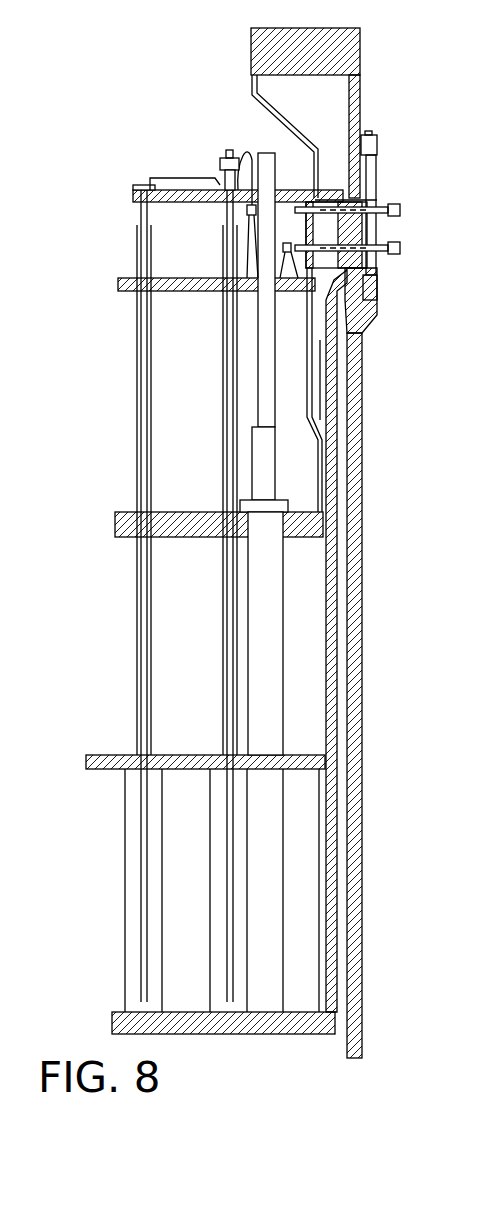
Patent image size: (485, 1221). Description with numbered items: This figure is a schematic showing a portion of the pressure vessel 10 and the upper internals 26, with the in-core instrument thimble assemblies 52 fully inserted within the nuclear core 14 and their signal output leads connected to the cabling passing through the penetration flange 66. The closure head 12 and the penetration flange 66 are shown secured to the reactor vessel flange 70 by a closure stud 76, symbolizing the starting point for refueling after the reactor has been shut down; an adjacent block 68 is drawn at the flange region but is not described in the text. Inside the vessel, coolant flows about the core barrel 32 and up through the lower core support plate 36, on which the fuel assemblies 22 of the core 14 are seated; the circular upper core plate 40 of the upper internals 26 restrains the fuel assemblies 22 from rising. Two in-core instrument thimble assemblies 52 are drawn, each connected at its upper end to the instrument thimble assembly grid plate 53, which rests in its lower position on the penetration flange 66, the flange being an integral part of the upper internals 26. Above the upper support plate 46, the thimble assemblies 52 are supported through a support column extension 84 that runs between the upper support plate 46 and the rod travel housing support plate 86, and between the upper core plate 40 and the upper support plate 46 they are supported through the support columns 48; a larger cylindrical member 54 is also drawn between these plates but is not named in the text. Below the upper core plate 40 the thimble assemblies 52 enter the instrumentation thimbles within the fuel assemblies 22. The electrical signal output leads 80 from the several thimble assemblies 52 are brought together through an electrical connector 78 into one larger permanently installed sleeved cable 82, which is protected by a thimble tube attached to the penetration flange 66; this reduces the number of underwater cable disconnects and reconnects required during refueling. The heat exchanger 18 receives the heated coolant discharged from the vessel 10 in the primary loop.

The pressure vessel 10 is at (380, 700).
The closure head 12 is at (360, 100).
The nuclear core 14 is at (106, 838).
The heat exchanger 18 is at (251, 52).
The fuel assemblies 22 is at (210, 930).
The upper internals 26 is at (198, 405).
The core barrel 32 is at (340, 468).
The lower core support plate 36 is at (112, 1025).
The upper core plate 40 is at (88, 762).
The upper support plate 46 is at (115, 525).
The support columns 48 is at (222, 710).
The in-core instrument thimble assemblies 52 is at (225, 643).
The instrument thimble assembly grid plate 53 is at (133, 195).
The cylinder 54 is at (283, 656).
The penetration flange 66 is at (394, 246).
The block 68 is at (372, 200).
The reactor vessel flange 70 is at (380, 312).
The closure stud 76 is at (378, 140).
The electrical connector 78 is at (222, 162).
The electrical signal output leads 80 is at (178, 178).
The permanently installed cable 82 is at (242, 158).
The support column extension 84 is at (222, 352).
The rod travel housing support plate 86 is at (118, 285).